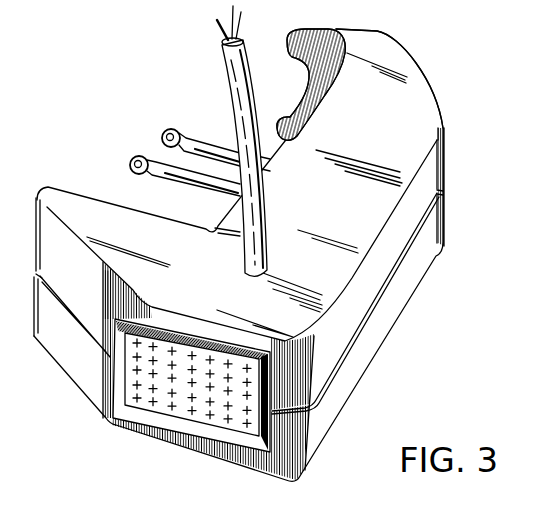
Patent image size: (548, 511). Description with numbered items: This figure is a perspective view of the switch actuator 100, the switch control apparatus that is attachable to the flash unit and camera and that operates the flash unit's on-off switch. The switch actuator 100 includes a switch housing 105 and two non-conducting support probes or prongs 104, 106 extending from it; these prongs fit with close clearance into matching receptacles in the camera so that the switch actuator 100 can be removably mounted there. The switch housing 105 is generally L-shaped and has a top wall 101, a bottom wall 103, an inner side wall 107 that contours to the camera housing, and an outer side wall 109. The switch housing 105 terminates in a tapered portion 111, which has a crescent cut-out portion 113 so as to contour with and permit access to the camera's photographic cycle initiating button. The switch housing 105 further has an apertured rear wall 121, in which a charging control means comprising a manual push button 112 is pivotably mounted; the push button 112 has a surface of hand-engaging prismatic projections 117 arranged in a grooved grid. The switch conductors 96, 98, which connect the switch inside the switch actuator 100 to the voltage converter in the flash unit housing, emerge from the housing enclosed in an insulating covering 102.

The conductor 96 is at (220, 28).
The conductor 98 is at (238, 20).
The switch actuator 100 is at (384, 373).
The top wall 101 is at (332, 215).
The insulating covering 102 is at (232, 95).
The bottom wall 103 is at (344, 426).
The support prong 104 is at (164, 131).
The switch housing 105 is at (458, 136).
The support prong 106 is at (133, 159).
The inner side wall 107 is at (306, 58).
The outer side wall 109 is at (392, 322).
The tapered portion 111 is at (348, 45).
The manual push button 112 is at (163, 408).
The crescent cut-out portion 113 is at (306, 72).
The prismatic projections 117 is at (198, 410).
The apertured rear wall 121 is at (243, 455).